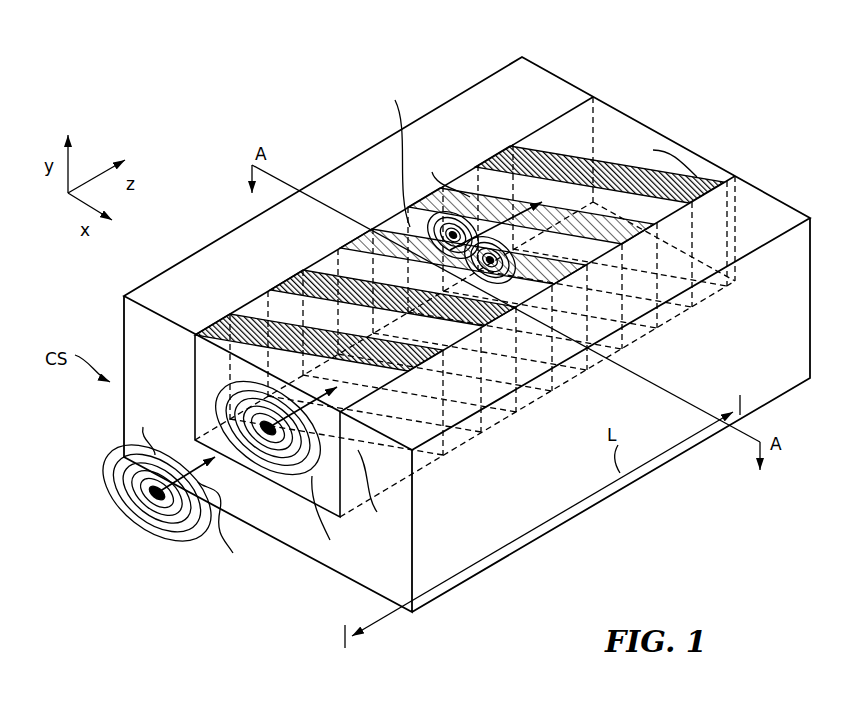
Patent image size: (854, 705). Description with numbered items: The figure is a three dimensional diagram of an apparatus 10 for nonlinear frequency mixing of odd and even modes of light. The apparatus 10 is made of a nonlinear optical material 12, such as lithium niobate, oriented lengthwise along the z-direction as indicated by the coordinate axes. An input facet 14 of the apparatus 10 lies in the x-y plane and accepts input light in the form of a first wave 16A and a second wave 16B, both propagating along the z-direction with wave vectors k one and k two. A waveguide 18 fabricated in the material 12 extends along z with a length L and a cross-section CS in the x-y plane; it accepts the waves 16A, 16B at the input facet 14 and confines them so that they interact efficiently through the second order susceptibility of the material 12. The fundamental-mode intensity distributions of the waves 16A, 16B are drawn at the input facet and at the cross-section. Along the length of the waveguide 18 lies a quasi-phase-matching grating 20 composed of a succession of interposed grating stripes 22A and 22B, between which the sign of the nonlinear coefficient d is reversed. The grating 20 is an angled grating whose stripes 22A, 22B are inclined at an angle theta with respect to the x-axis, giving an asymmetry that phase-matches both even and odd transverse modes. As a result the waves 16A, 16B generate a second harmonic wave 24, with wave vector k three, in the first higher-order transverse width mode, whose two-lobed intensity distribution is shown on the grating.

The apparatus 10 is at (145, 45).
The nonlinear optical material 12 is at (524, 552).
The input facet 14 is at (310, 560).
The first wave 16A is at (170, 563).
The second wave 16B is at (195, 378).
The waveguide 18 is at (440, 470).
The quasi-phase-matching grating 20 is at (527, 447).
The grating stripe 22A is at (217, 330).
The grating stripe 22B is at (250, 318).
The second harmonic wave 24 is at (370, 197).